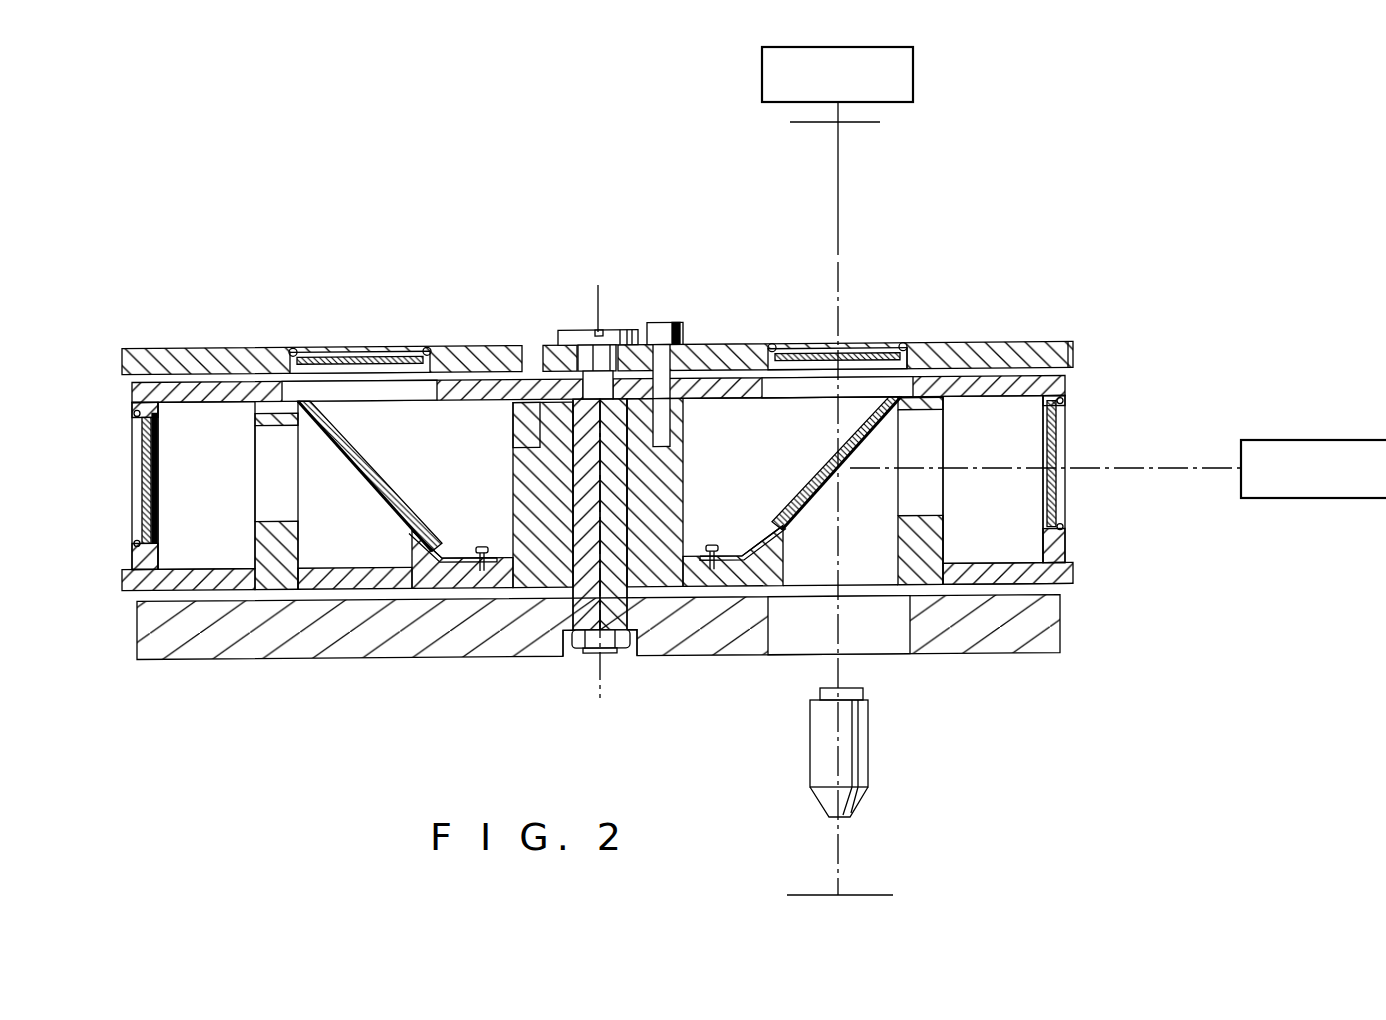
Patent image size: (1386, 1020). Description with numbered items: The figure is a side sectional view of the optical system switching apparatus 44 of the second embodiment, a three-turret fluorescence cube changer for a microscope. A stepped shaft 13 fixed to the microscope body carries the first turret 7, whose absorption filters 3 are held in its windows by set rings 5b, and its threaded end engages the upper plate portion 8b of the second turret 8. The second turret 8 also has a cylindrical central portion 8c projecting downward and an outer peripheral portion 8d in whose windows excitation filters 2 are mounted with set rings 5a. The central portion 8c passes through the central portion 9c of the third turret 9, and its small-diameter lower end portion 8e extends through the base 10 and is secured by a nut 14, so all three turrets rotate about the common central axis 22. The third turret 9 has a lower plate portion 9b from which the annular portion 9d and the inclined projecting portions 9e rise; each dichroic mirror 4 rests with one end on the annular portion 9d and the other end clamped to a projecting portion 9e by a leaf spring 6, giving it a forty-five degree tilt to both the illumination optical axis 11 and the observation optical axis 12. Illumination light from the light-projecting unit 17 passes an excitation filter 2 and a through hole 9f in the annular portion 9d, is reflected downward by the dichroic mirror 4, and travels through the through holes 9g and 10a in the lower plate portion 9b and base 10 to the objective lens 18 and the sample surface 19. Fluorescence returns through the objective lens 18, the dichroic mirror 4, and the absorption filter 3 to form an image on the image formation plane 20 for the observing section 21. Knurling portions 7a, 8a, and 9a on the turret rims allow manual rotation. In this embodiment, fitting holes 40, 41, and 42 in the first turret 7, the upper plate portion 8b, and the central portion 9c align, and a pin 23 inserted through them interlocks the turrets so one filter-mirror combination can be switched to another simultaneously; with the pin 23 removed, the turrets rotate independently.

The excitation filter 2 is at (160, 441).
The absorption filter 3 is at (336, 351).
The dichroic mirror 4 is at (364, 468).
The set ring 5a is at (1068, 535).
The set ring 5b is at (906, 347).
The leaf spring 6 is at (442, 538).
The first turret 7 is at (490, 346).
The knurling portion 7a is at (1075, 352).
The second turret 8 is at (740, 382).
The knurling portion 8a is at (1068, 386).
The upper plate portion 8b is at (738, 386).
The central portion 8c is at (563, 513).
The outer peripheral portion 8d is at (1070, 560).
The lower end portion 8e is at (565, 622).
The third turret 9 is at (668, 562).
The knurling portion 9a is at (1078, 582).
The lower plate portion 9b is at (1012, 598).
The central portion 9c is at (513, 462).
The annular portion 9d is at (256, 540).
The projecting portion 9e is at (412, 568).
The through hole 9f is at (943, 532).
The through hole 9g is at (895, 562).
The base 10 is at (1060, 640).
The through hole 10a is at (910, 608).
The illumination optical axis 11 is at (1218, 462).
The observation optical axis 12 is at (840, 668).
The stepped shaft 13 is at (576, 341).
The nut 14 is at (578, 642).
The light-projecting unit 17 is at (1323, 440).
The objective lens 18 is at (810, 742).
The sample surface 19 is at (868, 893).
The image formation plane 20 is at (868, 122).
The observing section 21 is at (913, 78).
The central axis 22 is at (605, 692).
The pin 23 is at (672, 324).
The fitting hole 40 is at (658, 332).
The fitting hole 41 is at (700, 410).
The fitting hole 42 is at (685, 458).
The optical system switching apparatus 44 is at (635, 484).